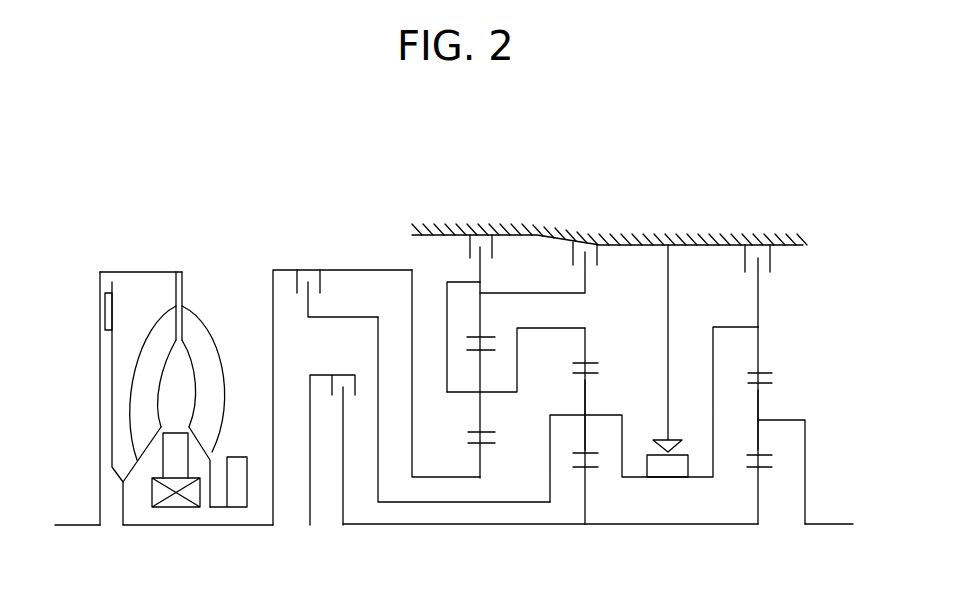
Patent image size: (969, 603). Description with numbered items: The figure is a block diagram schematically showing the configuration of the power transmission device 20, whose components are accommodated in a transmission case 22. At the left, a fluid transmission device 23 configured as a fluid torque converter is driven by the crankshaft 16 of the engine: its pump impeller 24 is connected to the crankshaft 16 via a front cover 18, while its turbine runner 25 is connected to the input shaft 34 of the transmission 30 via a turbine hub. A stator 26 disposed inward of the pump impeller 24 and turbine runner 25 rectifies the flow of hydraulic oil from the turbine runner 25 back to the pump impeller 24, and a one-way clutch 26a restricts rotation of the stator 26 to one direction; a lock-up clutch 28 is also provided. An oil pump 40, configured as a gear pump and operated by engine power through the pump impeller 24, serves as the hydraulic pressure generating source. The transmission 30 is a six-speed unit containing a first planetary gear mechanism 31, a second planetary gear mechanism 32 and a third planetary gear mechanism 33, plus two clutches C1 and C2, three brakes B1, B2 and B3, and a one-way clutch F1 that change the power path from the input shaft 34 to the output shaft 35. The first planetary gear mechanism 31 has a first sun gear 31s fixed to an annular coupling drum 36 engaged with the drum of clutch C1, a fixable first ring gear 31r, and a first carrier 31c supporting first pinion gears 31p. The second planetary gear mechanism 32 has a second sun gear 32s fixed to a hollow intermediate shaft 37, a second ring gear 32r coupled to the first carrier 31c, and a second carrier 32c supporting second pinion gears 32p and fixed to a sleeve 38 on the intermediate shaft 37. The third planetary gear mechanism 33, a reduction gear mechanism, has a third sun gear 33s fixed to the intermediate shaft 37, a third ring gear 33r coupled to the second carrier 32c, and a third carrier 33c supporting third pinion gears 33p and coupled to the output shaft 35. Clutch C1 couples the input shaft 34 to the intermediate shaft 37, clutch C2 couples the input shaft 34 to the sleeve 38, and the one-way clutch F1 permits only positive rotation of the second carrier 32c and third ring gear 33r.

The crankshaft 16 is at (67, 525).
The front cover 18 is at (100, 388).
The power transmission device 20 is at (73, 282).
The transmission case 22 is at (787, 250).
The fluid transmission device 23 is at (197, 310).
The pump impeller 24 is at (203, 338).
The turbine runner 25 is at (163, 318).
The stator 26 is at (175, 467).
The one-way clutch 26a is at (150, 492).
The lock-up clutch 28 is at (122, 310).
The transmission 30 is at (280, 257).
The first planetary gear mechanism 31 is at (467, 412).
The first sun gear 31s is at (492, 455).
The first ring gear 31r is at (485, 312).
The first pinion gears 31p is at (485, 423).
The first carrier 31c is at (520, 392).
The second planetary gear mechanism 32 is at (607, 367).
The second sun gear 32s is at (583, 478).
The second ring gear 32r is at (580, 352).
The second pinion gears 32p is at (597, 388).
The second carrier 32c is at (623, 447).
The third planetary gear mechanism 33 is at (776, 377).
The third sun gear 33s is at (762, 483).
The third ring gear 33r is at (762, 350).
The third pinion gears 33p is at (762, 405).
The third carrier 33c is at (807, 447).
The input shaft 34 is at (262, 525).
The output shaft 35 is at (838, 523).
The annular coupling drum 36 is at (413, 457).
The intermediate shaft 37 is at (690, 525).
The sleeve 38 is at (515, 500).
The oil pump 40 is at (223, 492).
The clutch C1 is at (330, 410).
The clutch C2 is at (323, 308).
The brake B1 is at (603, 263).
The brake B2 is at (500, 247).
The brake B3 is at (741, 268).
The one-way clutch F1 is at (643, 465).